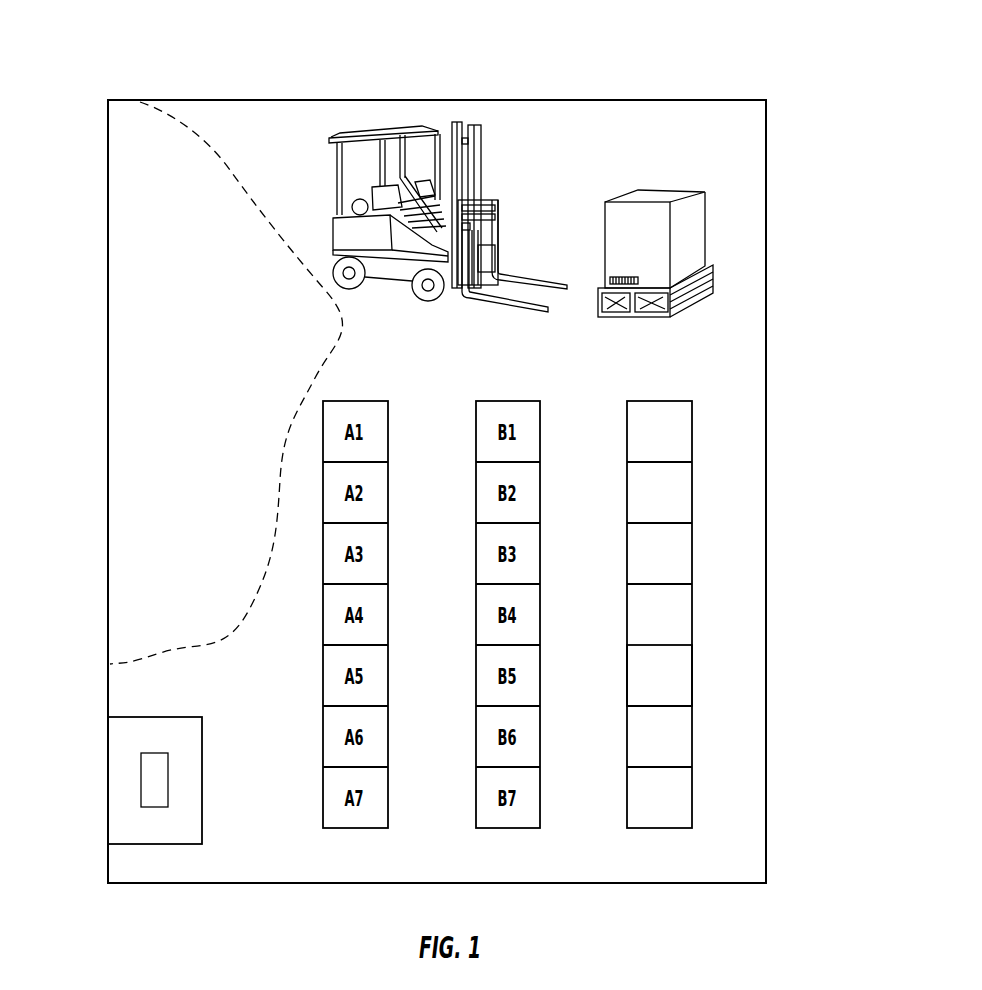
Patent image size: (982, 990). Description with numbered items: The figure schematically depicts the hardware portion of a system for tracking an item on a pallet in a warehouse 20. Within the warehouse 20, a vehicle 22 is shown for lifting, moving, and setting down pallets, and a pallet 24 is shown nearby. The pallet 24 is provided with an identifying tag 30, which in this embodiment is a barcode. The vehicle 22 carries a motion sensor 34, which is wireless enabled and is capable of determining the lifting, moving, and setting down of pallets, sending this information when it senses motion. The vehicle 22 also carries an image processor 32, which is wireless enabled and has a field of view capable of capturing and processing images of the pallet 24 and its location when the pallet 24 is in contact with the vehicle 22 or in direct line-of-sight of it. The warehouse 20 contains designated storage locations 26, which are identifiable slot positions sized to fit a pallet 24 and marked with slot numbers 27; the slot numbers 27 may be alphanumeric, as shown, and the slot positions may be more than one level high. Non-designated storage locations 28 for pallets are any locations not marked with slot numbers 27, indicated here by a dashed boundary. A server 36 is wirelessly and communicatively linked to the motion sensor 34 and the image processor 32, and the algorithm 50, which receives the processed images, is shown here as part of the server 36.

The warehouse 20 is at (626, 80).
The vehicle 22 is at (408, 233).
The pallet 24 is at (652, 231).
The designated storage locations 26 is at (682, 597).
The slot numbers 27 is at (676, 664).
The non-designated storage locations 28 is at (137, 237).
The identifying tag 30 is at (620, 273).
The image processor 32 is at (496, 255).
The motion sensor 34 is at (481, 276).
The server 36 is at (127, 742).
The algorithm 50 is at (131, 797).